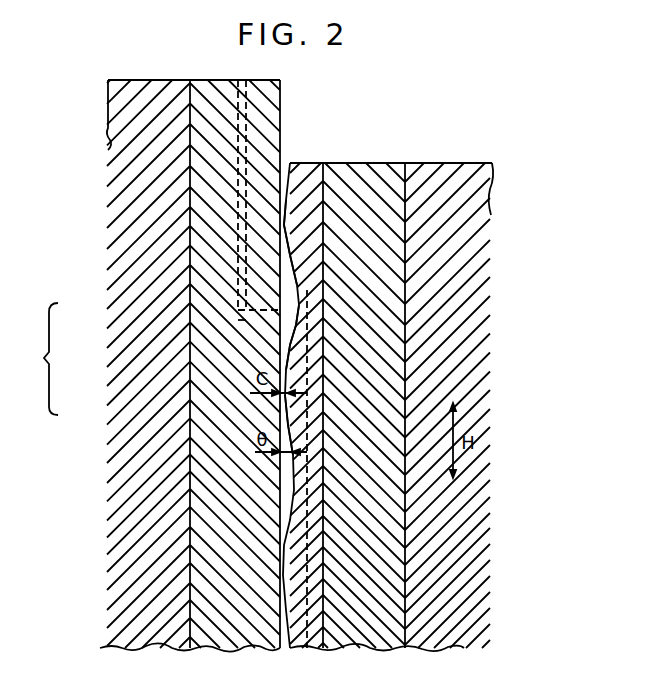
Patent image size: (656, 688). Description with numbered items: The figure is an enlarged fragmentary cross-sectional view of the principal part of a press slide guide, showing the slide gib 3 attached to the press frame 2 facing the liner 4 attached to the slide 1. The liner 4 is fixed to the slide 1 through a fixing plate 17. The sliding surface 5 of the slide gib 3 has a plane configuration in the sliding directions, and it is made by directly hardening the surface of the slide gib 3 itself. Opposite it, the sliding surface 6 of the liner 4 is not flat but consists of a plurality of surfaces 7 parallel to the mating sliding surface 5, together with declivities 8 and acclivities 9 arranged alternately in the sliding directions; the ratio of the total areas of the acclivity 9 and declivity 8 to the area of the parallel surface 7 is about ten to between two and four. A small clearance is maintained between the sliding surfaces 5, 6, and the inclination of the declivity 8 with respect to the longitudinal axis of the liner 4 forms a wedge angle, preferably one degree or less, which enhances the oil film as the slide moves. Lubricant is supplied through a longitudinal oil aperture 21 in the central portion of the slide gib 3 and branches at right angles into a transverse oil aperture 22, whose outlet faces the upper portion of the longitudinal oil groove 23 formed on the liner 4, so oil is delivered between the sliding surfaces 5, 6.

The slide 1 is at (442, 180).
The press frame 2 is at (123, 133).
The slide gib 3 is at (193, 192).
The liner 4 is at (313, 217).
The sliding surface 5 is at (280, 150).
The sliding surface 6 is at (42, 366).
The parallel surface 7 is at (283, 405).
The declivity 8 is at (285, 352).
The acclivity 9 is at (295, 255).
The fixing plate 17 is at (373, 177).
The longitudinal oil aperture 21 is at (237, 226).
The transverse oil aperture 22 is at (240, 321).
The longitudinal oil groove 23 is at (298, 318).